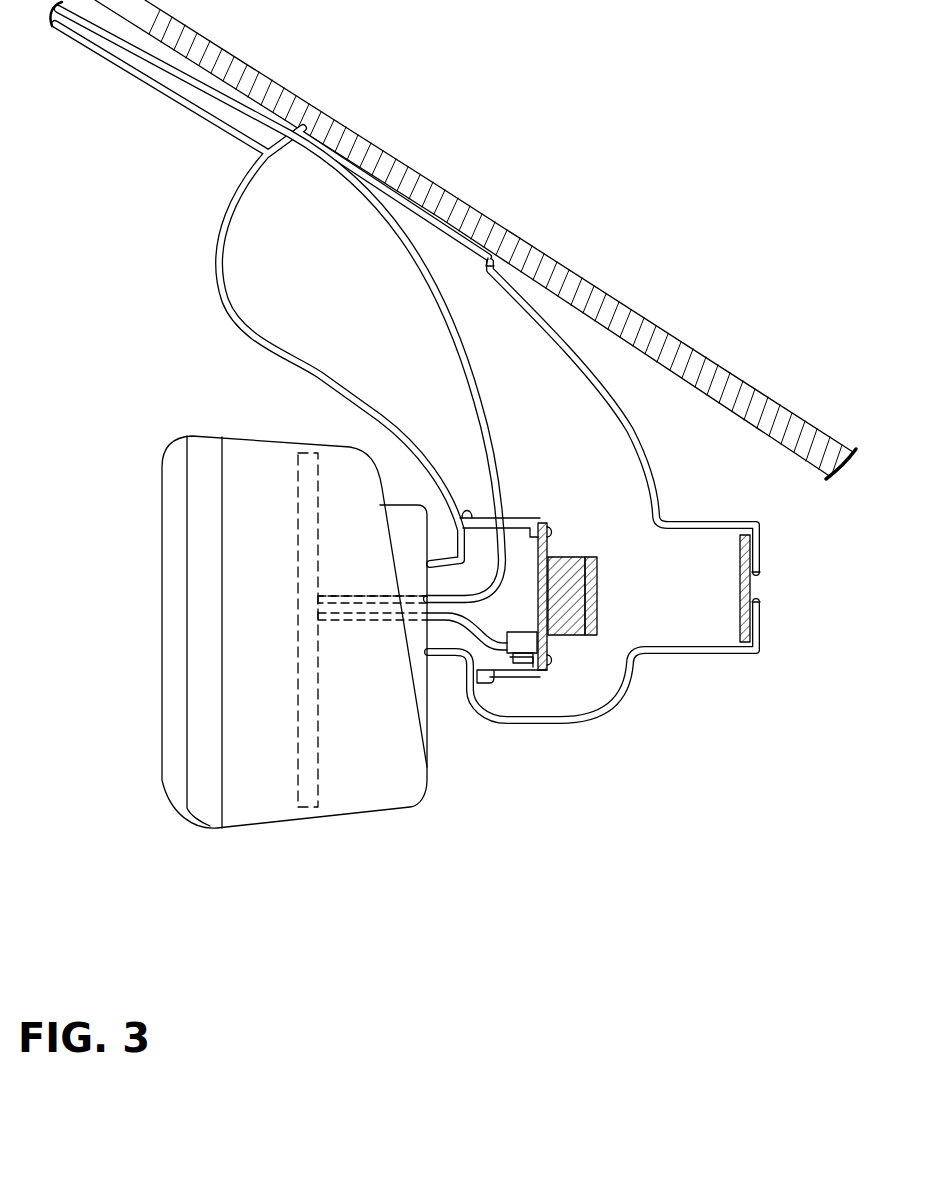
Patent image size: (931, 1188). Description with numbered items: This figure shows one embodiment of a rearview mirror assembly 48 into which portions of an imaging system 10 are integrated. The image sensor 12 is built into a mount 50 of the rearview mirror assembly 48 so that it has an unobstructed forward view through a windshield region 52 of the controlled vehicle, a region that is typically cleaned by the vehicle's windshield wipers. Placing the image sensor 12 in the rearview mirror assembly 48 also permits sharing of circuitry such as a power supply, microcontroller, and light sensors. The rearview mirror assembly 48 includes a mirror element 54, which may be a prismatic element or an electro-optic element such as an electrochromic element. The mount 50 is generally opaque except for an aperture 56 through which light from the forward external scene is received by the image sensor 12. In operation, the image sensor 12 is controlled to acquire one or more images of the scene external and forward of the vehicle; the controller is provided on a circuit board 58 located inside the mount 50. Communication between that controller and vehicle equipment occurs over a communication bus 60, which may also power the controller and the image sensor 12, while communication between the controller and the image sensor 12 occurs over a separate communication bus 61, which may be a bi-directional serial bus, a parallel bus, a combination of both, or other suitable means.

The imaging system 10 is at (590, 655).
The image sensor 12 is at (537, 595).
The rearview mirror assembly 48 is at (207, 845).
The mount 50 is at (266, 253).
The windshield region 52 is at (651, 295).
The mirror element 54 is at (163, 653).
The aperture 56 is at (760, 578).
The circuit board 58 is at (318, 745).
The communication bus 60 is at (468, 383).
The communication bus 61 is at (465, 603).